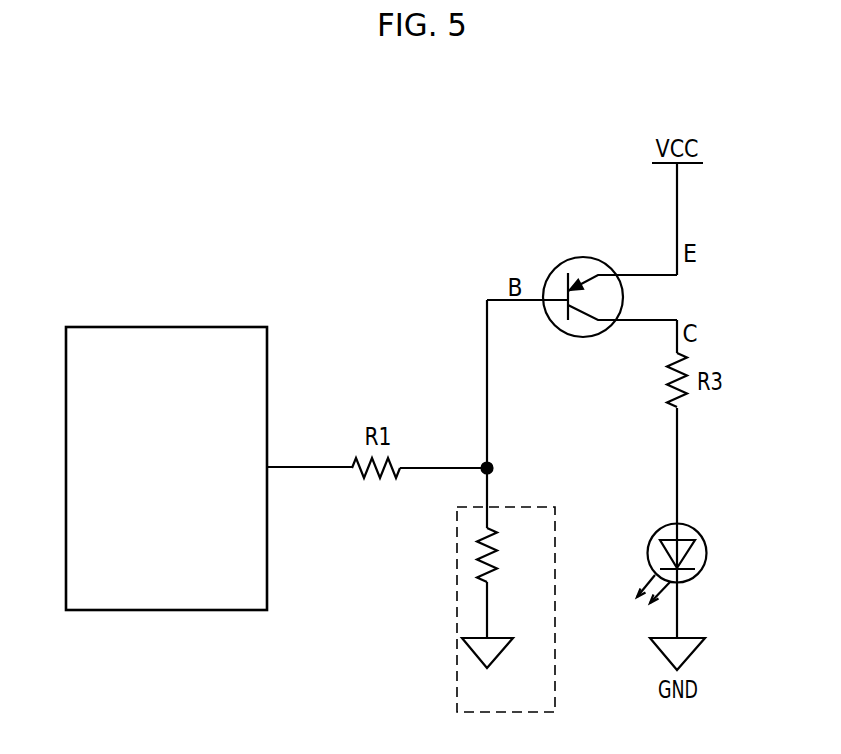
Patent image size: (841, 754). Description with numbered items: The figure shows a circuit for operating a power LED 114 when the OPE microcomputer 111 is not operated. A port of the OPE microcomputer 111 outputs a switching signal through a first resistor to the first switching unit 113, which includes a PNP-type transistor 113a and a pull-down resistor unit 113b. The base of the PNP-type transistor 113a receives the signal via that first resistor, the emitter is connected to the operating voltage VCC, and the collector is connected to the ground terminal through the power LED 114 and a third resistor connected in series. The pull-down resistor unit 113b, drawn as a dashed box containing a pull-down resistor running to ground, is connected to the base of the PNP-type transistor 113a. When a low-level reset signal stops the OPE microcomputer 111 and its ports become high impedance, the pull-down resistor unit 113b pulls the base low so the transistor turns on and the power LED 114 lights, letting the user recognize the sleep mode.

The OPE microcomputer 111 is at (167, 327).
The first switching unit 113 is at (591, 259).
The PNP-type transistor 113a is at (549, 272).
The pull-down resistor unit 113b is at (457, 595).
The power LED 114 is at (707, 552).